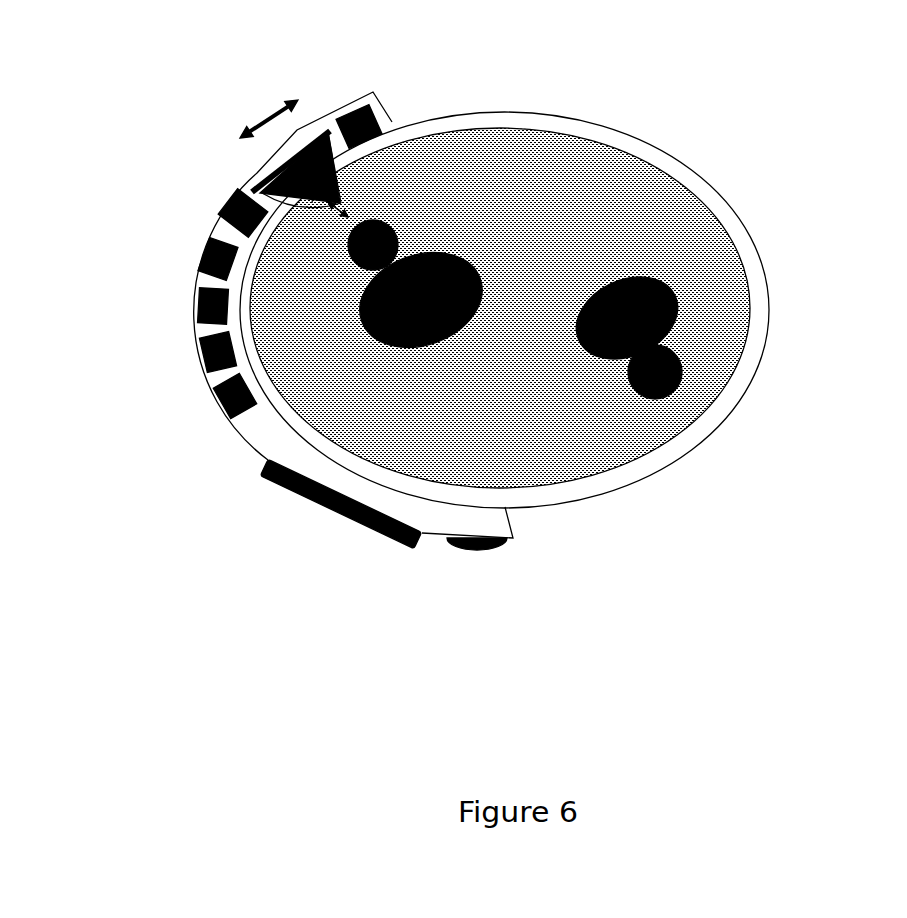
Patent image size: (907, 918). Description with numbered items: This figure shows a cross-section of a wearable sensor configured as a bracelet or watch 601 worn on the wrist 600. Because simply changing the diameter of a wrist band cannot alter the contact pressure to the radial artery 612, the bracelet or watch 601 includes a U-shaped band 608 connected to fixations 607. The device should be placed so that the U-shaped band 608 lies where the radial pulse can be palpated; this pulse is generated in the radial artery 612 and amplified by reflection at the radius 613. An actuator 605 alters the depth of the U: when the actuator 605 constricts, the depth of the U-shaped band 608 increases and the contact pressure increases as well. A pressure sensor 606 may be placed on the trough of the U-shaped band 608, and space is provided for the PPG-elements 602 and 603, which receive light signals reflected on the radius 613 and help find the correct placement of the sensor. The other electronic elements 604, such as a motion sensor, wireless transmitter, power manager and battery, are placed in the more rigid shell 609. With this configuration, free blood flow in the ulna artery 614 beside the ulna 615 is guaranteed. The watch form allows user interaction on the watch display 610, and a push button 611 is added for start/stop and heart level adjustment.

The wrist 600 is at (623, 182).
The bracelet or watch 601 is at (746, 227).
The PPG-element 602 is at (326, 183).
The PPG-element 603 is at (379, 174).
The pressure sensor 606 is at (402, 200).
The other electronic elements 604 is at (193, 240).
The actuator 605 is at (258, 173).
The fixations 607 is at (350, 127).
The U-shaped band 608 is at (312, 203).
The more rigid shell 609 is at (256, 429).
The watch display 610 is at (338, 512).
The push button 611 is at (496, 565).
The radial artery 612 is at (329, 259).
The radius 613 is at (420, 300).
The ulna artery 614 is at (626, 389).
The ulna 615 is at (627, 318).